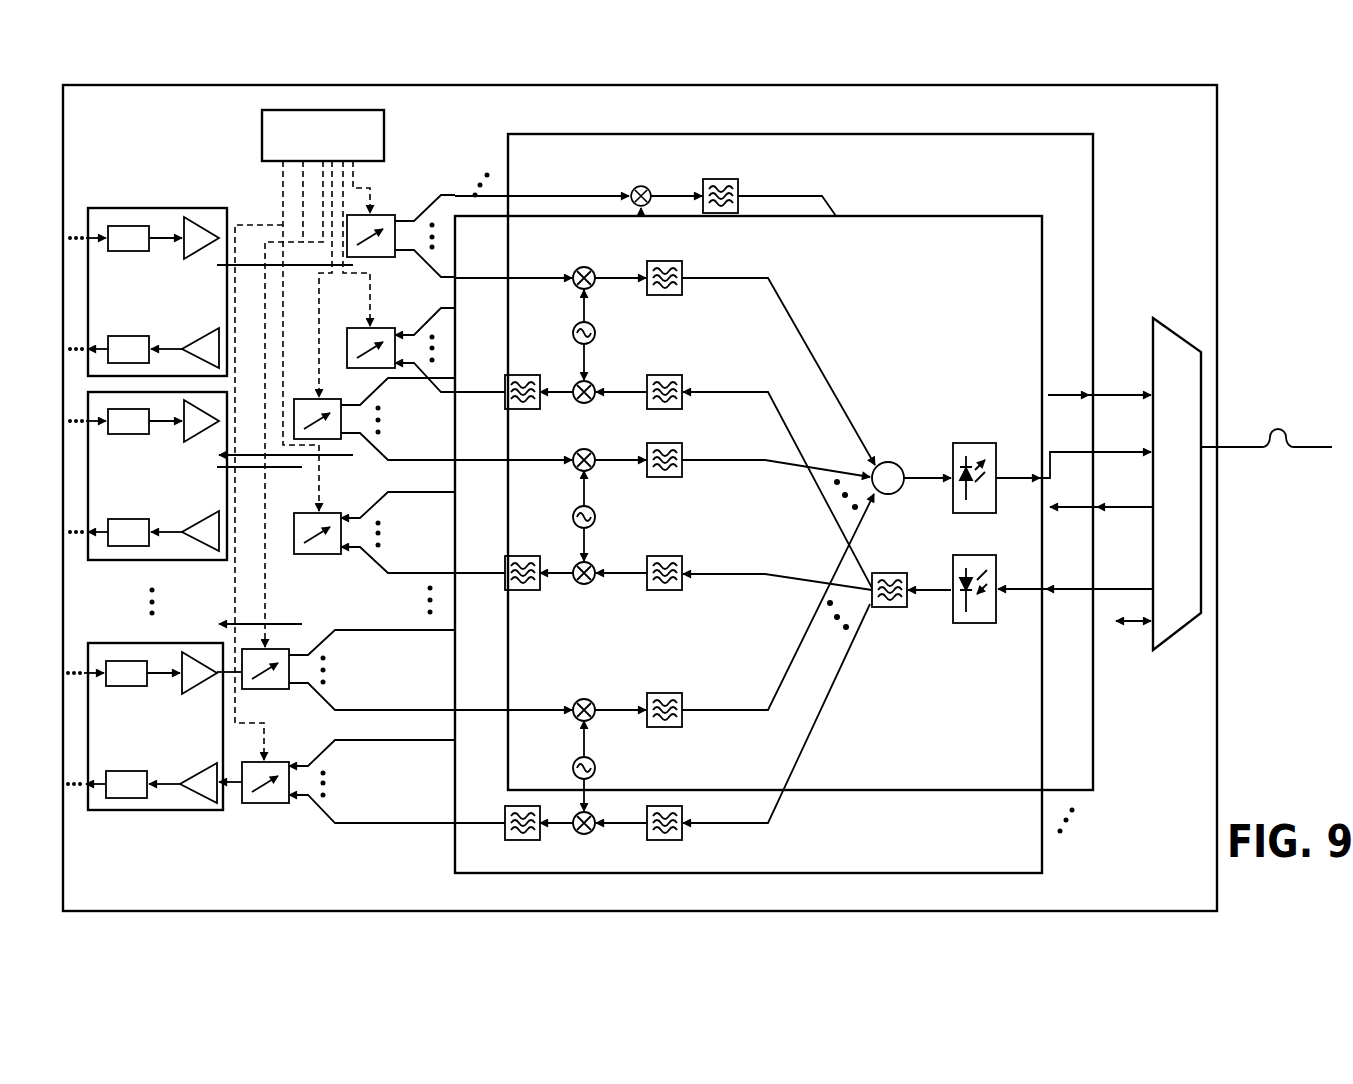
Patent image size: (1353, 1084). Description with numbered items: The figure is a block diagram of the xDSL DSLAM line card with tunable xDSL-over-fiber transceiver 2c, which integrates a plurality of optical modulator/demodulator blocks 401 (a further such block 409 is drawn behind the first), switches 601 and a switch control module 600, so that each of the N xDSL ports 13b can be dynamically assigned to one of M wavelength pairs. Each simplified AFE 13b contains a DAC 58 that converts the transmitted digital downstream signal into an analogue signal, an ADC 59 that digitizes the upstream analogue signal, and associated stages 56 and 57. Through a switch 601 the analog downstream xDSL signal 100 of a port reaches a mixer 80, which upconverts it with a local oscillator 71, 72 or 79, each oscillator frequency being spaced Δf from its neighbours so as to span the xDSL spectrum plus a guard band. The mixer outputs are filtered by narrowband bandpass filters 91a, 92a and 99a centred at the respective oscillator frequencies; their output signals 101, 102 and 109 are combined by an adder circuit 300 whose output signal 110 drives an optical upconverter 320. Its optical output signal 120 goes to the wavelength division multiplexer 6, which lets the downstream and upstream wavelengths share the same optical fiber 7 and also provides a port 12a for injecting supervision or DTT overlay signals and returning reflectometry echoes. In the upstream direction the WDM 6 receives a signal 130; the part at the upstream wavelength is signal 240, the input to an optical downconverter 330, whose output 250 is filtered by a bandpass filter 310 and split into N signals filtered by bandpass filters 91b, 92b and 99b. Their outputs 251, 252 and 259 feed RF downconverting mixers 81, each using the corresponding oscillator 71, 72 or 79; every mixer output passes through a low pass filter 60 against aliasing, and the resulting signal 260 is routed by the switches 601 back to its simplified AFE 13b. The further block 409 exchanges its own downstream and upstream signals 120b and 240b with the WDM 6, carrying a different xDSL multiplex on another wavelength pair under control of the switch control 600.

The xDSL DSLAM line card with tunable xDSLoF transceiver—Central 2c is at (1221, 133).
The wavelength division multiplexer 6 is at (1175, 332).
The optical fiber 7 is at (1317, 451).
The input port 12a is at (1134, 626).
The simplified AFE 13b is at (116, 207).
The power amplifier 56 is at (185, 253).
The low noise amplifier 57 is at (190, 333).
The DAC 58 is at (125, 253).
The ADC 59 is at (127, 334).
The low pass filter 60 is at (540, 373).
The local oscillator 71 is at (600, 330).
The local oscillator 72 is at (598, 512).
The local oscillator 79 is at (599, 766).
The mixer 80 is at (652, 189).
The mixer 81 is at (598, 385).
The bandpass filter 91a is at (688, 300).
The bandpass filter 91b is at (688, 375).
The bandpass filter 92a is at (688, 477).
The bandpass filter 92b is at (688, 558).
The bandpass filter 99a is at (688, 728).
The bandpass filter 99b is at (688, 807).
The analog downstream xDSL signal 100 is at (580, 193).
The upconverted signal line 101 is at (814, 194).
The upconverted signal line 102 is at (742, 457).
The upconverted signal line 109 is at (732, 706).
The output signal 110 is at (920, 474).
The optical upconverter output signal 120 is at (1108, 450).
The optical signal line 120b is at (1062, 393).
The received signal 130 is at (1246, 446).
The upstream signal 240 is at (1108, 588).
The received optical signal line 240b is at (1064, 502).
The output signal 250 is at (935, 598).
The filtered receive signal line 251 is at (630, 390).
The filtered receive signal line 252 is at (623, 575).
The filtered receive signal line 259 is at (621, 819).
The low pass filter output signal 260 is at (480, 390).
The adder circuit 300 is at (886, 461).
The bandpass filter 310 is at (887, 612).
The optical upconverter 320 is at (965, 441).
The optical downconverter 330 is at (978, 627).
The optical modulator/demodulator block 401 is at (1045, 853).
The additional frequency conversion unit 409 is at (1097, 753).
The switch control module 600 is at (260, 150).
The switch 601 is at (388, 212).